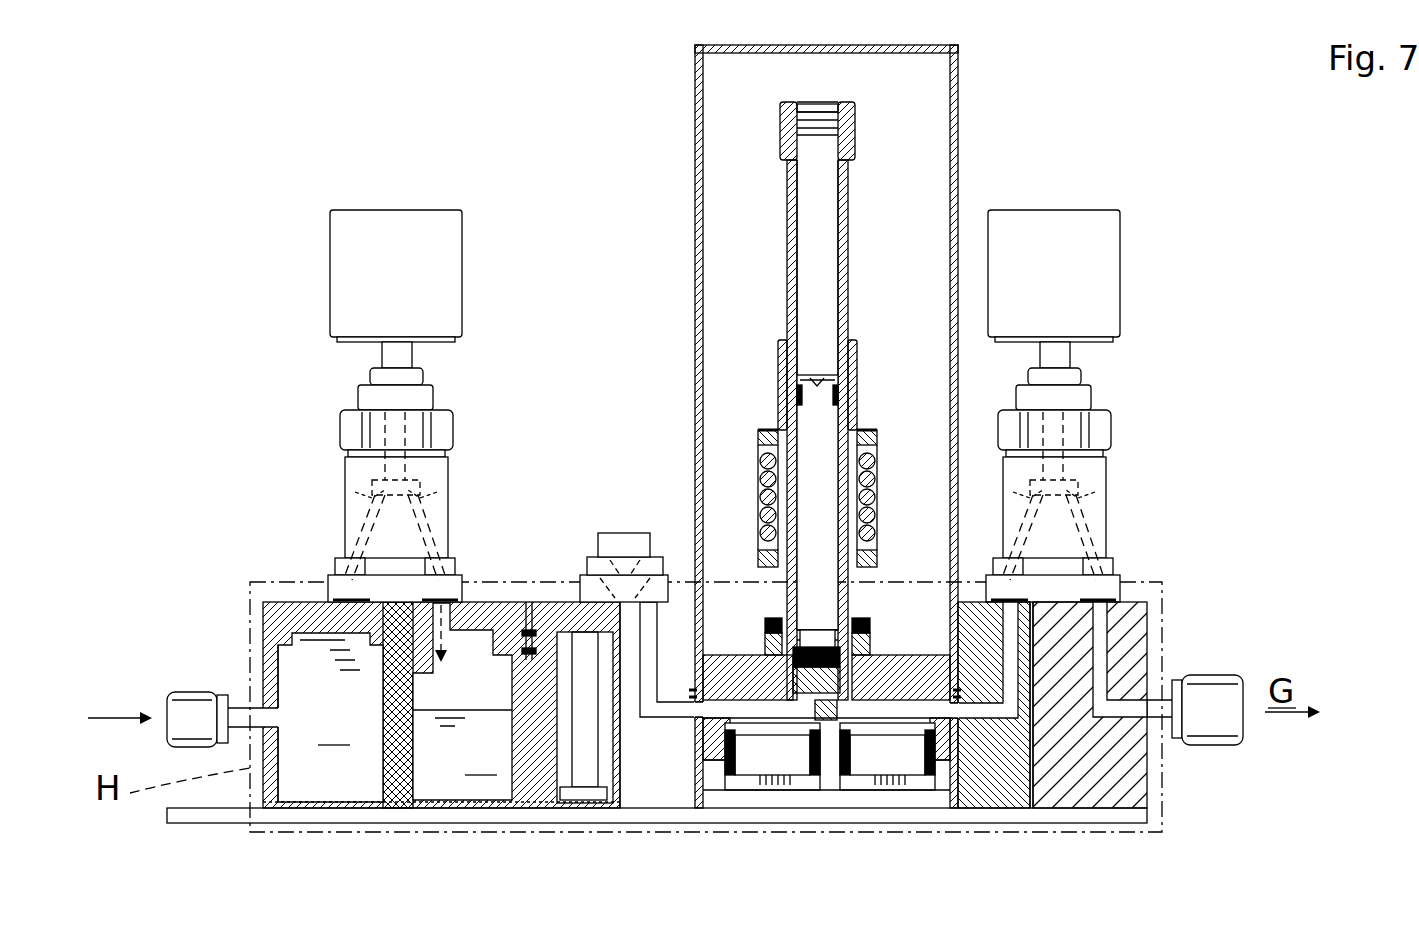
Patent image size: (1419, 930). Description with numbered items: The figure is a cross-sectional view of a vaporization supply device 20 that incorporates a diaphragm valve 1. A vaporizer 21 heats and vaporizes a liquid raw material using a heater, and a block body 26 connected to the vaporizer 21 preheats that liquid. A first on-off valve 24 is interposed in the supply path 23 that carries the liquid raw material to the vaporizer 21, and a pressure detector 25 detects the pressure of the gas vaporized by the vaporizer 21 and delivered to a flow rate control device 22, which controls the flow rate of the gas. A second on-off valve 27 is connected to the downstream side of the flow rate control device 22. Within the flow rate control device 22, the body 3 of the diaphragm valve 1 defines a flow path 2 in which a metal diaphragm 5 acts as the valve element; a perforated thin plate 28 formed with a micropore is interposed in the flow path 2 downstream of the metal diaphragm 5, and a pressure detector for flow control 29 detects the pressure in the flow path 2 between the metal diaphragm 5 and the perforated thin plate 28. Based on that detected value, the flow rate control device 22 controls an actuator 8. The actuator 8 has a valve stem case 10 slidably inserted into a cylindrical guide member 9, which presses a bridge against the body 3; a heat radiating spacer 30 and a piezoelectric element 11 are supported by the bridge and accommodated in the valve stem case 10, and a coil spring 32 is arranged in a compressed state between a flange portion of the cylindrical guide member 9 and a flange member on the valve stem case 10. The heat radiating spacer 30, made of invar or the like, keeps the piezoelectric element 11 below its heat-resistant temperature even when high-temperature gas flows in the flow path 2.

The diaphragm valve 1 is at (756, 390).
The flow path 2 is at (925, 690).
The body 3 is at (738, 658).
The metal diaphragm 5 is at (818, 742).
The actuator 8 is at (784, 278).
The cylindrical guide member 9 is at (862, 605).
The valve stem case 10 is at (849, 285).
The piezoelectric element 11 is at (822, 212).
The vaporization supply device 20 is at (146, 196).
The vaporizer 21 is at (531, 600).
The flow rate control device 22 is at (964, 108).
The supply path 23 is at (352, 537).
The first on-off valve 24 is at (326, 392).
The pressure detector 25 is at (752, 745).
The block body 26 is at (275, 605).
The second on-off valve 27 is at (1124, 422).
The perforated thin plate 28 is at (988, 722).
The pressure detector for flow control 29 is at (920, 745).
The heat radiating spacer 30 is at (822, 413).
The coil spring 32 is at (878, 488).